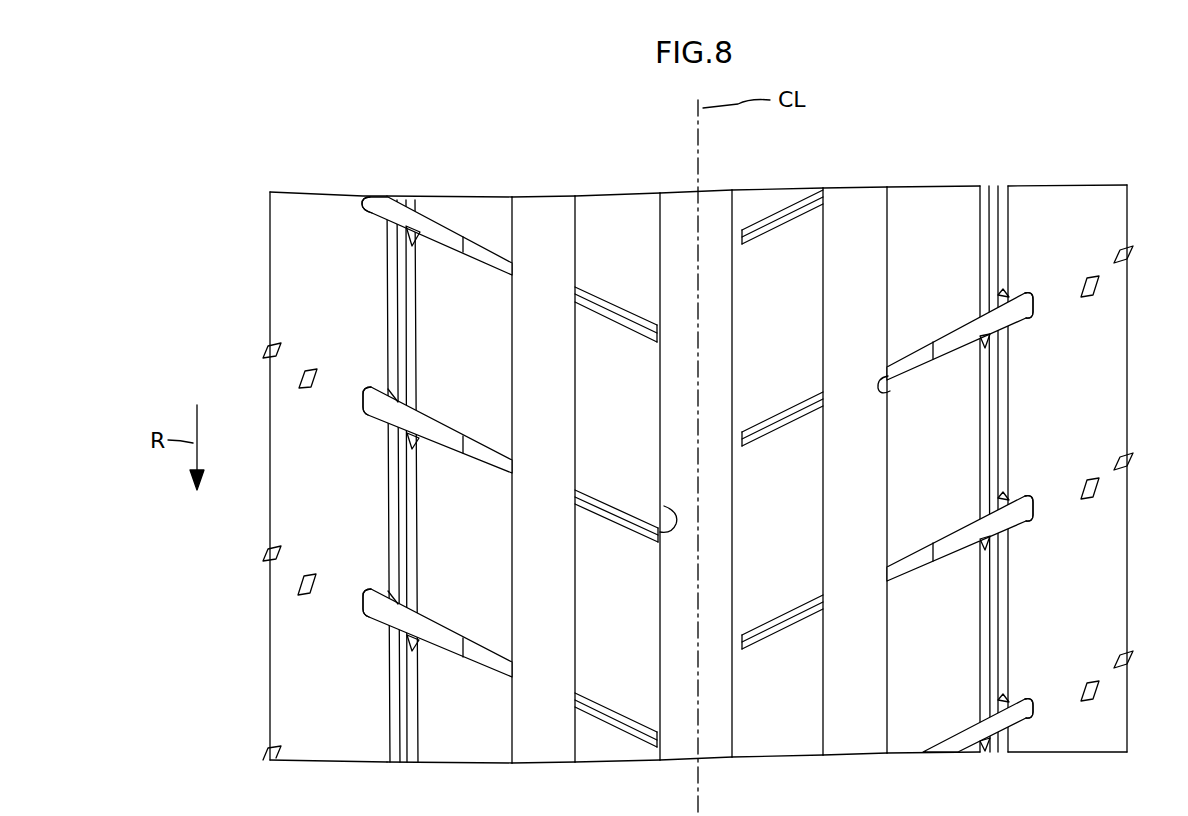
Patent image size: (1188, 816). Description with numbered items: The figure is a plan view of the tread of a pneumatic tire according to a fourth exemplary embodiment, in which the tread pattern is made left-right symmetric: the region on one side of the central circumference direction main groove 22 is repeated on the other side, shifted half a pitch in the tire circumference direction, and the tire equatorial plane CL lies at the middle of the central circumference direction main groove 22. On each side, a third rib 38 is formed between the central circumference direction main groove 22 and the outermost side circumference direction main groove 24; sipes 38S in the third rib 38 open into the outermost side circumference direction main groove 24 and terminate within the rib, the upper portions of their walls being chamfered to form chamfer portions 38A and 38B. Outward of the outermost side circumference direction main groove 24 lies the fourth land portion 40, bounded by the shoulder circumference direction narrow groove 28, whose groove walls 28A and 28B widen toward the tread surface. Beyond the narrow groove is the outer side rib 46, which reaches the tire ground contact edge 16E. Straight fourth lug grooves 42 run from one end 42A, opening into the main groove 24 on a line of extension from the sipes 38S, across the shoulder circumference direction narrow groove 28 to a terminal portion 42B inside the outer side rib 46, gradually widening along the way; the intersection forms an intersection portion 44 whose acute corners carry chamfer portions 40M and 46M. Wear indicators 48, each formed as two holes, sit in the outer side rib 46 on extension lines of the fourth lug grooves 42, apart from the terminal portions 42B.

The tire ground contact edge 16E is at (268, 200).
The central circumference direction main groove 22 is at (712, 192).
The outermost side circumference direction main groove 24 is at (543, 197).
The shoulder circumference direction narrow groove 28 is at (402, 268).
The groove wall 28A is at (410, 252).
The groove wall 28B is at (392, 293).
The third rib 38 is at (625, 196).
The chamfer portion 38A is at (590, 492).
The chamfer portion 38B is at (598, 505).
The sipe 38S is at (620, 533).
The fourth land portion 40 is at (455, 194).
The chamfer portion 40M is at (428, 440).
The fourth lug groove 42 is at (441, 428).
The one end 42A is at (667, 507).
The terminal portion 42B is at (362, 402).
The raised bottom portion of lug groove 44 is at (481, 455).
The outer side rib 46 is at (316, 192).
The chamfer portion 46M is at (395, 388).
The wear indicator 48 is at (310, 372).